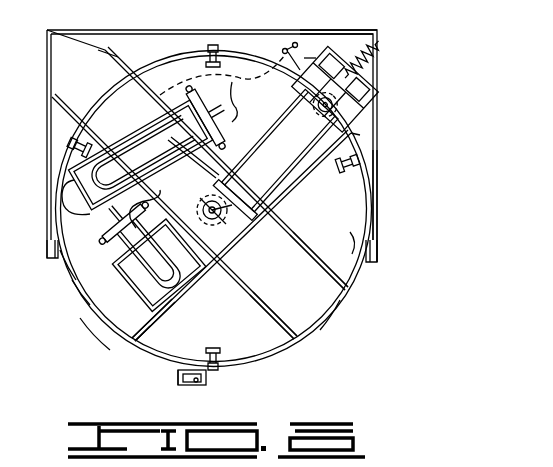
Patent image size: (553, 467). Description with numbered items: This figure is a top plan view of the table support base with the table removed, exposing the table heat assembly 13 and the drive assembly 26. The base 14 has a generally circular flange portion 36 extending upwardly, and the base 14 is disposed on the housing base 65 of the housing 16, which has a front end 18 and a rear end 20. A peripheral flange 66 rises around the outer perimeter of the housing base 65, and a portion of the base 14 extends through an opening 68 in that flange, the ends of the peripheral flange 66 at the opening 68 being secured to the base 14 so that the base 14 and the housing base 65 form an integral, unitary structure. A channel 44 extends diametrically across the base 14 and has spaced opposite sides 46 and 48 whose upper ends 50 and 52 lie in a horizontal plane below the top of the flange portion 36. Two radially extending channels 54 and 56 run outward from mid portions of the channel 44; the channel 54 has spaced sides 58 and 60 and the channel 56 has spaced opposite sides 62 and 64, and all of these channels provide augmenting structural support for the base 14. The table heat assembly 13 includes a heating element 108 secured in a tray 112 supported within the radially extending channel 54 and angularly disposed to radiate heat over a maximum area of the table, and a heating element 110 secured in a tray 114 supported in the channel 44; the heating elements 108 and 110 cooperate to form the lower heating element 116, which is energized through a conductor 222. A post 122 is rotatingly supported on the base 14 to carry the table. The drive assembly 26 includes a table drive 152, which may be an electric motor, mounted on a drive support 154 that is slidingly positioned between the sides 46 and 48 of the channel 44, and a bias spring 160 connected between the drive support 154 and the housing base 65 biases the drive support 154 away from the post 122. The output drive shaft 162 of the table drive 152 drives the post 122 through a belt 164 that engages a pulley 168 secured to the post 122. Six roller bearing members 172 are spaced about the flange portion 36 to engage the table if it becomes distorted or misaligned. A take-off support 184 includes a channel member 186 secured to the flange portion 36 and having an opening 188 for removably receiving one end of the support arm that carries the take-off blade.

The table heat assembly 13 is at (100, 213).
The base 14 is at (270, 362).
The housing 16 is at (379, 52).
The front end 18 is at (371, 262).
The rear end 20 is at (337, 31).
The drive assembly 26 is at (311, 150).
The flange portion 36 is at (86, 322).
The channel 44 is at (138, 345).
The side 46 is at (76, 262).
The side 48 is at (205, 285).
The upper end 50 is at (86, 296).
The upper end 52 is at (145, 330).
The radially extending channel 54 is at (118, 52).
The radially extending channel 56 is at (336, 308).
The side 58 is at (100, 56).
The side 60 is at (57, 92).
The side 62 is at (306, 246).
The side 64 is at (298, 336).
The housing base 65 is at (360, 135).
The peripheral flange 66 is at (379, 190).
The opening 68 is at (352, 246).
The heating element 108 is at (132, 170).
The heating element 110 is at (129, 282).
The tray 112 is at (60, 191).
The tray 114 is at (160, 241).
The lower heating element 116 is at (48, 240).
The post 122 is at (218, 220).
The table drive 152 is at (366, 78).
The drive support 154 is at (310, 46).
The bias spring 160 is at (372, 40).
The output drive shaft 162 is at (340, 118).
The belt 164 is at (296, 173).
The pulley 168 is at (382, 93).
The roller bearing member 172 is at (88, 140).
The take-off support 184 is at (206, 390).
The channel member 186 is at (178, 375).
The opening 188 is at (196, 386).
The conductor 222 is at (284, 48).